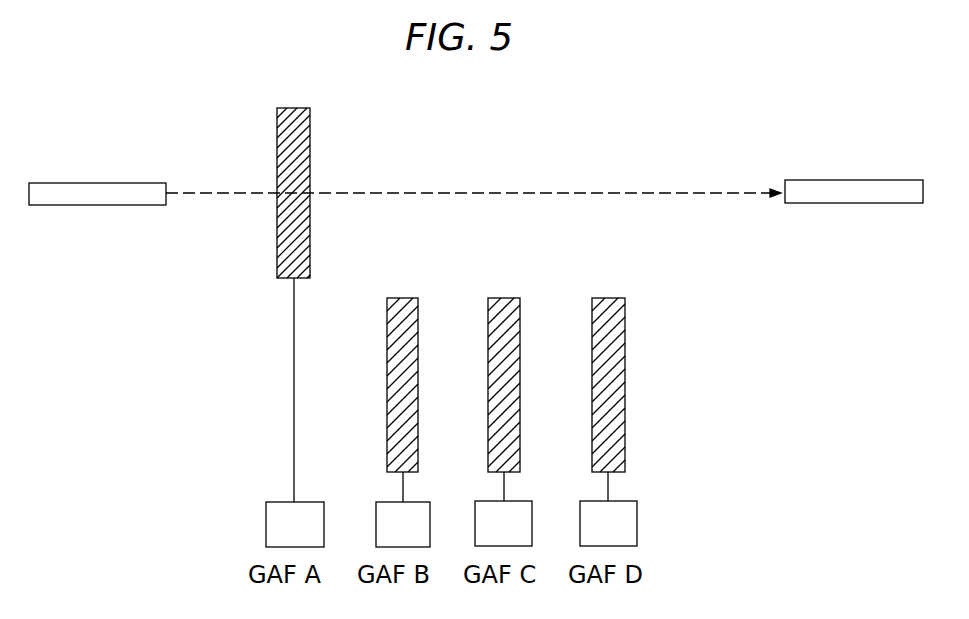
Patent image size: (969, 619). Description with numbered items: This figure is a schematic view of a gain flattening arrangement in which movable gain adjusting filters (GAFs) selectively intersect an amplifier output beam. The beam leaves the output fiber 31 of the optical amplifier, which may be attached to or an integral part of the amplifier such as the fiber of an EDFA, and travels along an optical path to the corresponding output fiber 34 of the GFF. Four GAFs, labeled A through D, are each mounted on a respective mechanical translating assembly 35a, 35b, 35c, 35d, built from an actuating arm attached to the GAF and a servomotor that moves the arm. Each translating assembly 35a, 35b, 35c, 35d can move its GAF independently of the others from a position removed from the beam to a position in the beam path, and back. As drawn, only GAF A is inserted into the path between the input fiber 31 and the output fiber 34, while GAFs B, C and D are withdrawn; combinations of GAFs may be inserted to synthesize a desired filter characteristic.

The output fiber from the optical amplifier 31 is at (93, 183).
The output fiber from the GFF 34 is at (852, 180).
The mechanical translating assembly 35a is at (266, 502).
The mechanical translating assembly 35b is at (376, 502).
The mechanical translating assembly 35c is at (477, 501).
The mechanical translating assembly 35d is at (581, 501).